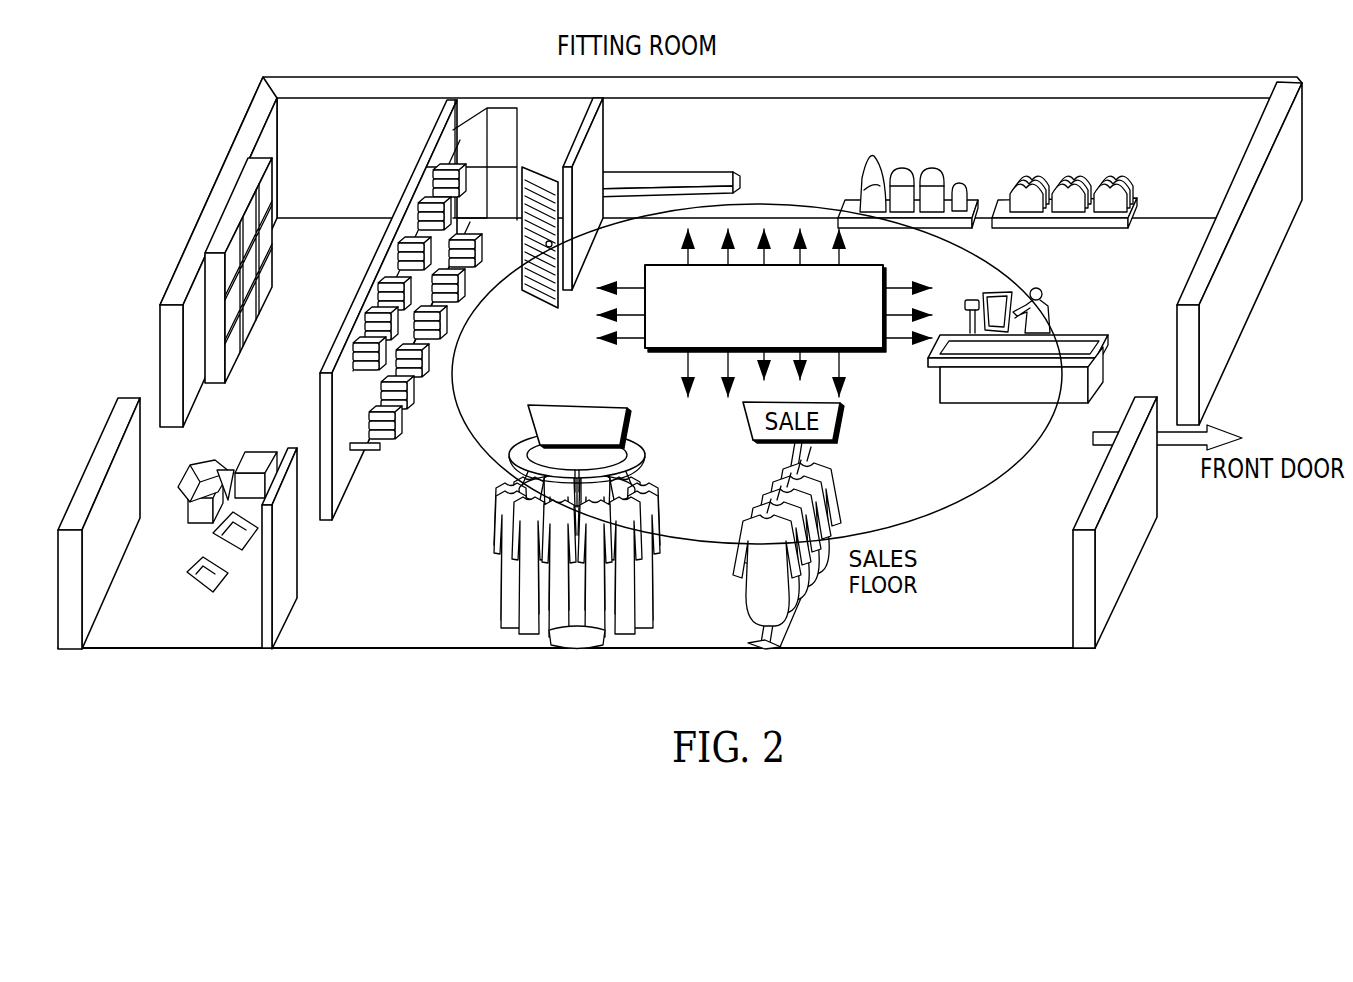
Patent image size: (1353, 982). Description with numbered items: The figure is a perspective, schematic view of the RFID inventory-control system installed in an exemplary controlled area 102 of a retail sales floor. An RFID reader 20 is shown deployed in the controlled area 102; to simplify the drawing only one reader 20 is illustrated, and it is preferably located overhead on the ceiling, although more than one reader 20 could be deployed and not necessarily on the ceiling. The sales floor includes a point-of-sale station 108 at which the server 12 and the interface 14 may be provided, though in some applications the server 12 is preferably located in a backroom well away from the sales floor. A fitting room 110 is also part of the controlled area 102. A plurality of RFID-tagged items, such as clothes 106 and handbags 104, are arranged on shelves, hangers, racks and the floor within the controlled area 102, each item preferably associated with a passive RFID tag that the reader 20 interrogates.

The controlled area 102 is at (970, 647).
The handbags 104 is at (982, 153).
The clothes 106 is at (483, 598).
The point-of-sale station 108 is at (1032, 333).
The fitting room 110 is at (545, 123).
The server 12 is at (997, 291).
The interface 14 is at (980, 299).
The RFID reader 20 is at (678, 357).